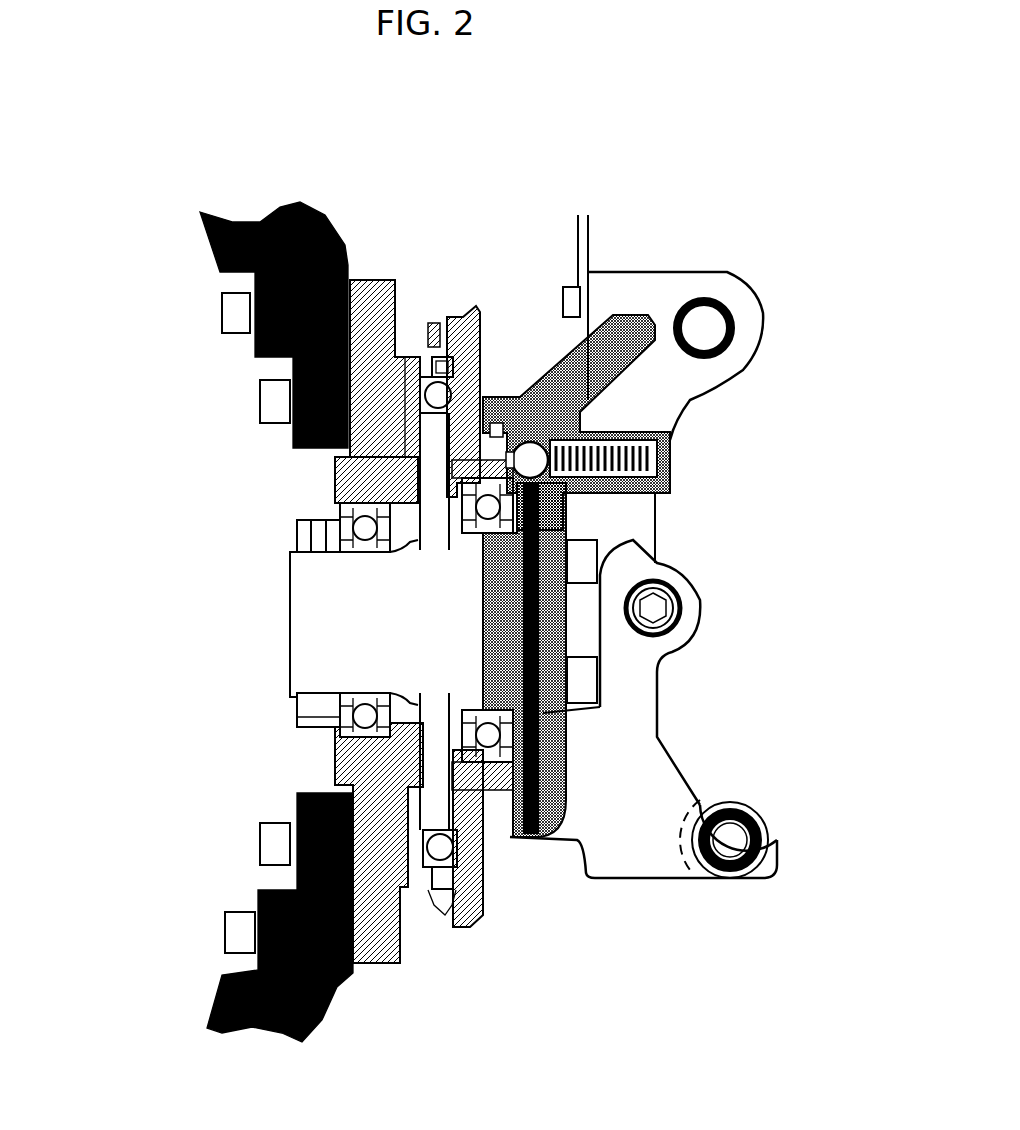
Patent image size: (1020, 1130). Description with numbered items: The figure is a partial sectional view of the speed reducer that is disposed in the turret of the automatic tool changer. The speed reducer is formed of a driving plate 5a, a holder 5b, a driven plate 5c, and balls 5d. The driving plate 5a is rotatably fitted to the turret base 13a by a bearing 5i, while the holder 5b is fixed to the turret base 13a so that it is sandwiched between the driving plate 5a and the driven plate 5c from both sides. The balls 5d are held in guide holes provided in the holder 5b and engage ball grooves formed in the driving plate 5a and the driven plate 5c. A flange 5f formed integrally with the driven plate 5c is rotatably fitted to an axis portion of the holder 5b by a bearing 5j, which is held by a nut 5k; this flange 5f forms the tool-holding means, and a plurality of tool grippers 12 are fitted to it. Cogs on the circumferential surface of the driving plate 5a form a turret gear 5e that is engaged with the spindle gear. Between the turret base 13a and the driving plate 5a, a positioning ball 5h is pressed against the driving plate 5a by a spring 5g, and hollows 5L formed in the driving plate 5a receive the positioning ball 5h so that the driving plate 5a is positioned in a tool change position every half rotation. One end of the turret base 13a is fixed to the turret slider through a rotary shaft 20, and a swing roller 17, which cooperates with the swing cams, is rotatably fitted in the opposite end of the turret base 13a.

The tool gripper 12 is at (257, 222).
The flange 5f is at (372, 280).
The bearing 5j is at (333, 482).
The nut 5k is at (293, 522).
The holder 5b is at (300, 590).
The driving plate 5a is at (447, 913).
The driven plate 5c is at (412, 340).
The balls 5d is at (477, 387).
The turret gear 5e is at (485, 927).
The positioning ball 5h is at (580, 513).
The spring 5g is at (662, 310).
The hollows 5L is at (521, 447).
The bearing 5i is at (550, 712).
The turret base 13a is at (623, 855).
The swing roller 17 is at (777, 882).
The rotary shaft 20 is at (722, 303).